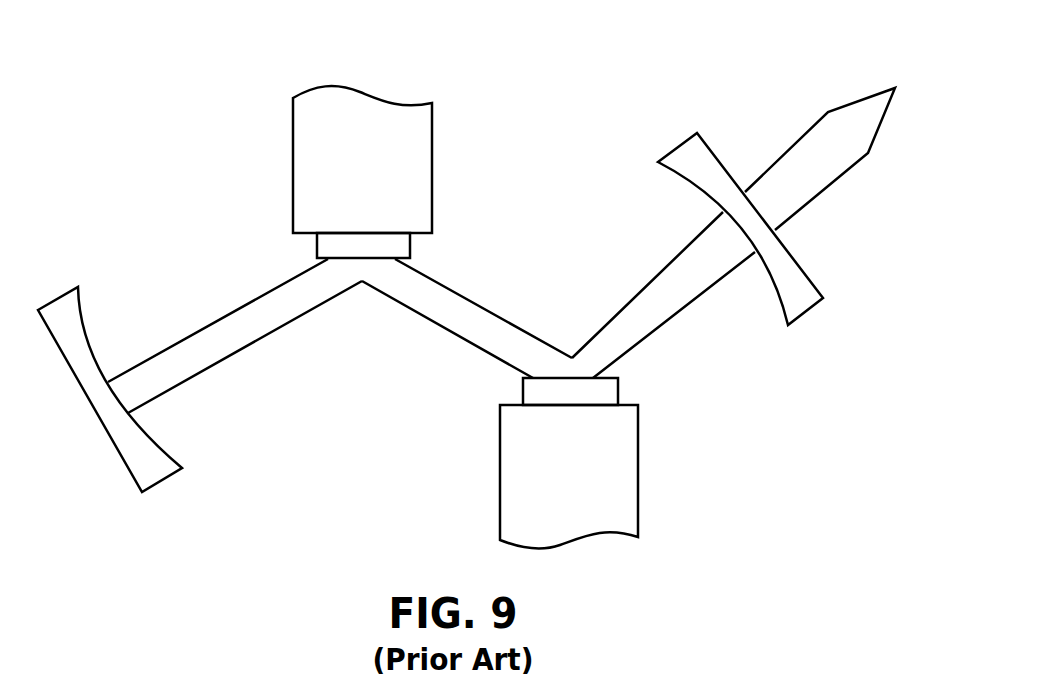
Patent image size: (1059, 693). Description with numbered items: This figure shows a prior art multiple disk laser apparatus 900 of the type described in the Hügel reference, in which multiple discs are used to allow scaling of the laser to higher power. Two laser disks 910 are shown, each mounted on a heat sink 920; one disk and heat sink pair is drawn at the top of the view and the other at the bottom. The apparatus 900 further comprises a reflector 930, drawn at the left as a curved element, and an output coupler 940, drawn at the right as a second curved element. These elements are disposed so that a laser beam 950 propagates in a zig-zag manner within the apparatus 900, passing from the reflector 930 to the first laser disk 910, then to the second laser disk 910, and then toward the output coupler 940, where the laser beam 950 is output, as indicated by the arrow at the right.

The multiple disk laser apparatus 900 is at (487, 43).
The laser disk 910 is at (402, 245).
The heat sink 920 is at (410, 162).
The reflector 930 is at (153, 467).
The output coupler 940 is at (708, 193).
The laser beam 950 is at (823, 138).